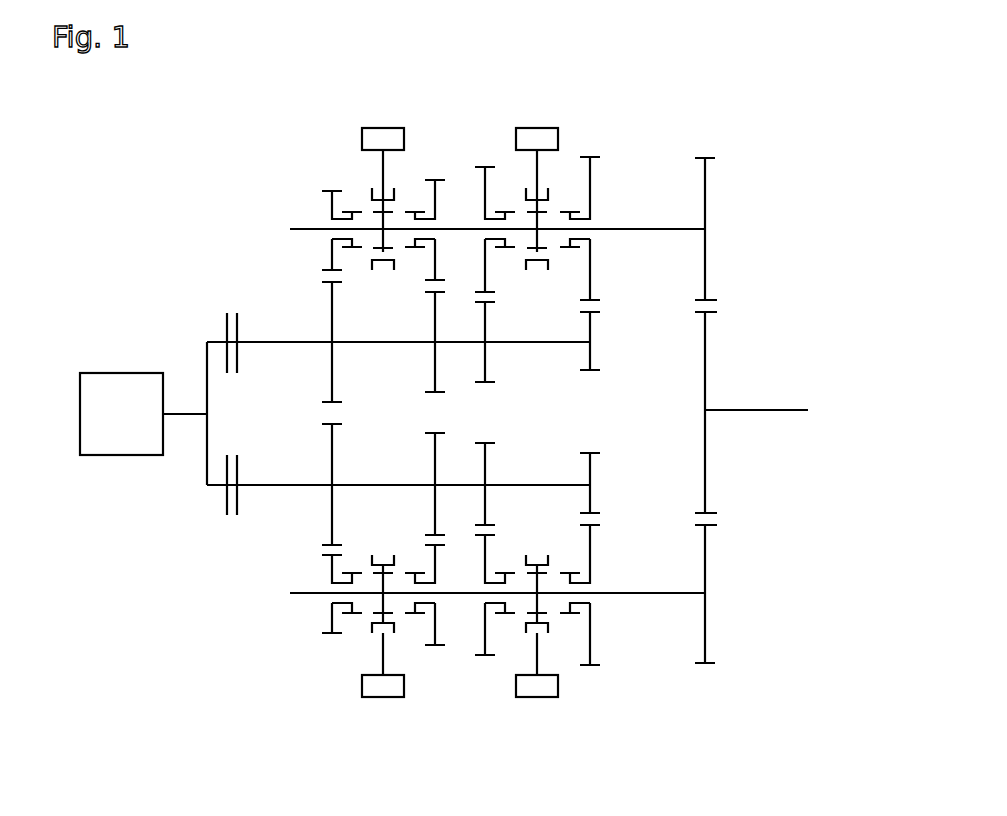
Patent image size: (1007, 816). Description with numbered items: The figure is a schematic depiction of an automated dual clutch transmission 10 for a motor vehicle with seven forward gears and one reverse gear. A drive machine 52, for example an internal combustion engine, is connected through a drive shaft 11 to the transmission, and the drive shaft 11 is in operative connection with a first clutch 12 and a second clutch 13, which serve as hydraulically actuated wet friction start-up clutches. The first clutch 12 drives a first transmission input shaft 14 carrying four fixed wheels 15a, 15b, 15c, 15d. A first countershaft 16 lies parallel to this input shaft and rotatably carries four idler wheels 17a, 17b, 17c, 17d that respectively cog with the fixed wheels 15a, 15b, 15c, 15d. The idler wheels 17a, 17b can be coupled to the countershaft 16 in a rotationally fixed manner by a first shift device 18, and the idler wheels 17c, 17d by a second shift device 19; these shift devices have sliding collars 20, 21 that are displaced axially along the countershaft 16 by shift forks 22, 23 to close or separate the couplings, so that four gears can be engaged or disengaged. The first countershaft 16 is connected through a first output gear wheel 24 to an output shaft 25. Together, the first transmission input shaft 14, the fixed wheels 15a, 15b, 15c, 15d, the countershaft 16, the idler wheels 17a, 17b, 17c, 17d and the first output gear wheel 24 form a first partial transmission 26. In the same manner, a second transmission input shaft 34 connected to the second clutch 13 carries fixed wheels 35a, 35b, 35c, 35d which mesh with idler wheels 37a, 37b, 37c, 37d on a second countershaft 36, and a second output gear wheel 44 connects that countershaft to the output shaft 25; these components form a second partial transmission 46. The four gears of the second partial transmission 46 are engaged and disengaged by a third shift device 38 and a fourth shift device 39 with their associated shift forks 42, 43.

The dual clutch transmission 10 is at (738, 85).
The drive shaft 11 is at (183, 412).
The first clutch 12 is at (227, 320).
The second clutch 13 is at (227, 503).
The first transmission input shaft 14 is at (300, 340).
The fixed wheel 15a is at (332, 383).
The fixed wheel 15b is at (433, 363).
The fixed wheel 15c is at (513, 371).
The fixed wheel 15d is at (580, 371).
The first countershaft 16 is at (290, 229).
The idler wheel 17a is at (322, 190).
The idler wheel 17b is at (435, 178).
The idler wheel 17c is at (493, 167).
The idler wheel 17d is at (590, 158).
The first shift device 18 is at (350, 147).
The second shift device 19 is at (548, 117).
The sliding collar 20 is at (372, 187).
The sliding collar 21 is at (545, 190).
The shift fork 22 is at (383, 170).
The shift fork 23 is at (538, 168).
The first output gear wheel 24 is at (707, 175).
The output shaft 25 is at (790, 408).
The first partial transmission 26 is at (205, 218).
The second transmission input shaft 34 is at (300, 487).
The fixed wheel 35a is at (332, 455).
The fixed wheel 35b is at (432, 434).
The fixed wheel 35c is at (485, 463).
The fixed wheel 35d is at (590, 463).
The countershaft 36 is at (290, 597).
The idler wheel 37a is at (322, 633).
The idler wheel 37b is at (437, 650).
The idler wheel 37c is at (485, 658).
The idler wheel 37d is at (602, 665).
The third shift device 38 is at (358, 668).
The fourth shift device 39 is at (538, 698).
The shift fork 42 is at (383, 645).
The shift fork 43 is at (537, 655).
The second output gear wheel 44 is at (707, 665).
The second partial transmission 46 is at (215, 645).
The drive machine 52 is at (92, 455).